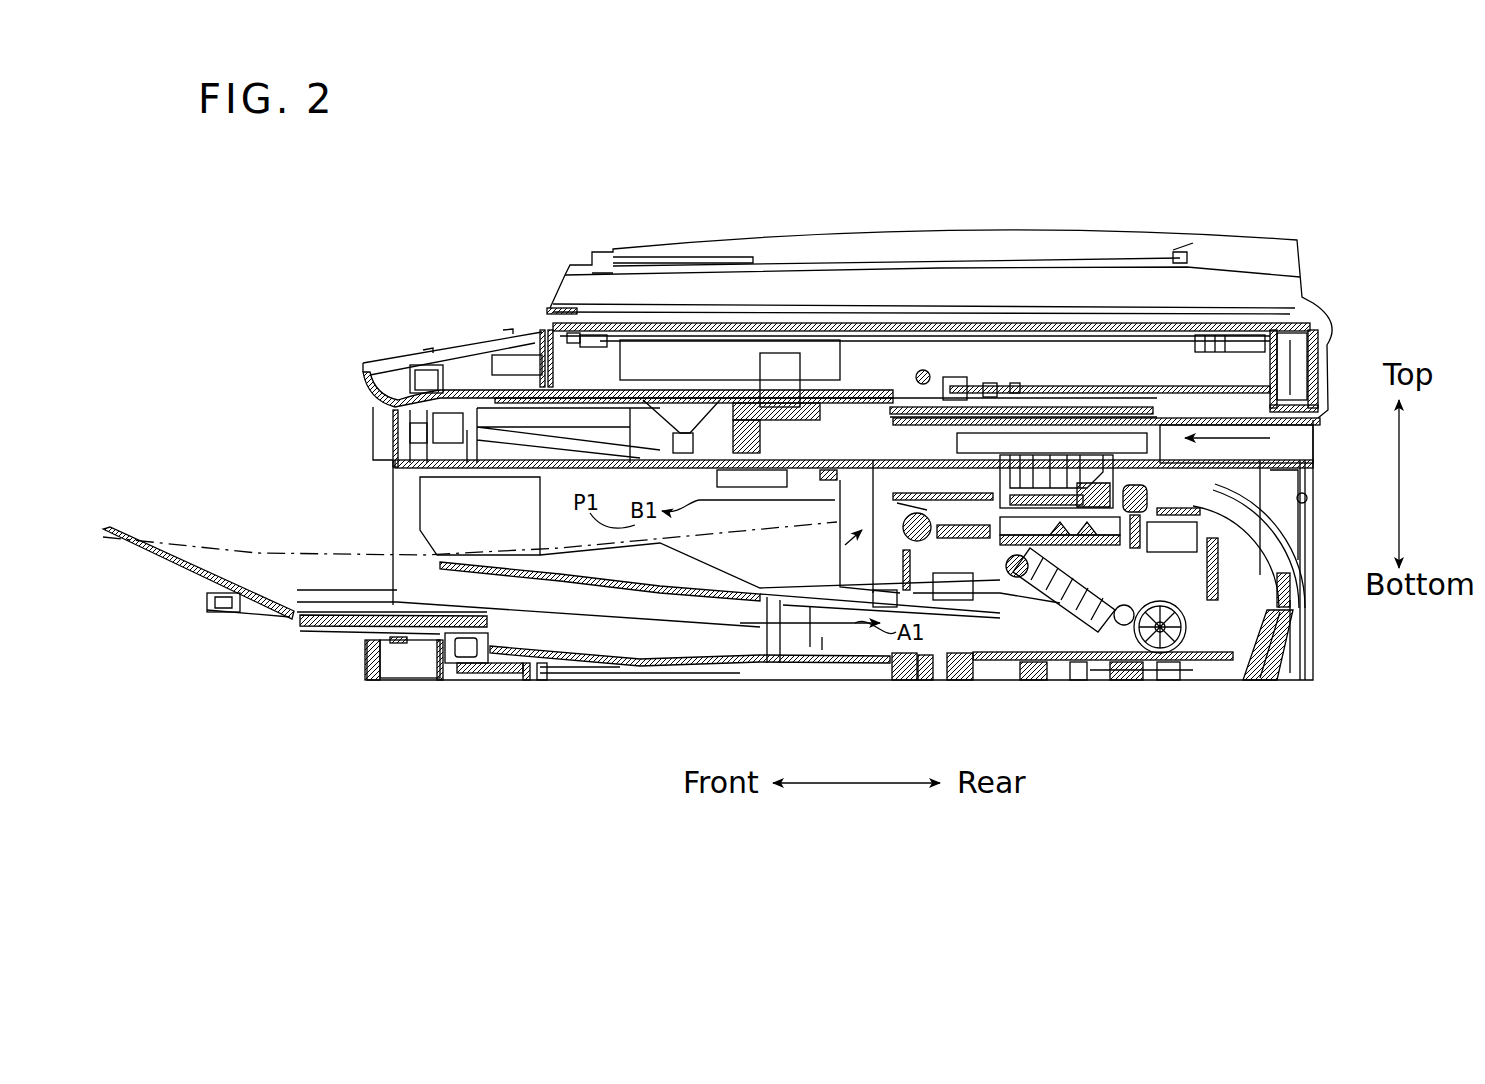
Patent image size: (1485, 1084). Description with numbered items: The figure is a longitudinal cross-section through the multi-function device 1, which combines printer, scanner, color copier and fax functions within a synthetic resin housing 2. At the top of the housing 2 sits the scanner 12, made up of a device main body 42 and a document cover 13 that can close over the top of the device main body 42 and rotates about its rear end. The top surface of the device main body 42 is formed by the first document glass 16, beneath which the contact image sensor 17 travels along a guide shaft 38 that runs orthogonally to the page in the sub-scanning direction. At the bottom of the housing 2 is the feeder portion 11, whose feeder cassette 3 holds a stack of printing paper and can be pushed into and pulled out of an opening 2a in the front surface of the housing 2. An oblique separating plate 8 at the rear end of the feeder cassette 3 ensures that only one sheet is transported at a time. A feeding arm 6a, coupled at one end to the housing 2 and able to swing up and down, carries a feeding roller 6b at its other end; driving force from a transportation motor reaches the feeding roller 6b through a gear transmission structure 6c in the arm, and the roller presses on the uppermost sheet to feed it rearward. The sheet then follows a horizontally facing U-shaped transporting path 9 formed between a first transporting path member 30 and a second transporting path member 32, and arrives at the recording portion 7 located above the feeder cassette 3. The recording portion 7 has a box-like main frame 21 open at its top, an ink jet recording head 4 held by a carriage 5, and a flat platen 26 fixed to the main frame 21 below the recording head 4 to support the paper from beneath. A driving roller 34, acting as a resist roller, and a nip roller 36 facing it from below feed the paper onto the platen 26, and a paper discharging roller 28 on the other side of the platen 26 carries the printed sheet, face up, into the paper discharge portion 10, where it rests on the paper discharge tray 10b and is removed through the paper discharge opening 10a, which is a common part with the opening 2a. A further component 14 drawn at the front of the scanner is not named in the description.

The multi-function device 1 is at (541, 241).
The housing 2 is at (1327, 505).
The opening 2a is at (395, 575).
The feeder cassette 3 is at (823, 633).
The recording head 4 is at (1053, 452).
The carriage 5 is at (1088, 447).
The feeding arm 6a is at (1003, 653).
The feeding roller 6b is at (1183, 667).
The gear transmission structure 6c is at (1120, 667).
The recording portion 7 is at (1327, 413).
The oblique separating plate 8 is at (1280, 657).
The transporting path 9 is at (1280, 590).
The paper discharge portion 10 is at (893, 508).
The paper discharge opening 10a is at (410, 492).
The paper discharge tray 10b is at (630, 583).
The feeder portion 11 is at (588, 598).
The scanner 12 is at (672, 362).
The document cover 13 is at (863, 240).
The front cover 14 is at (467, 336).
The first document glass 16 is at (1027, 323).
The contact image sensor 17 is at (757, 355).
The main frame 21 is at (962, 600).
The platen 26 is at (1078, 660).
The paper discharging roller 28 is at (897, 528).
The first transporting path member 30 is at (1317, 578).
The second transporting path member 32 is at (1287, 447).
The driving roller 34 is at (1170, 433).
The nip roller 36 is at (1227, 660).
The guide shaft 38 is at (920, 367).
The device main body 42 is at (716, 390).